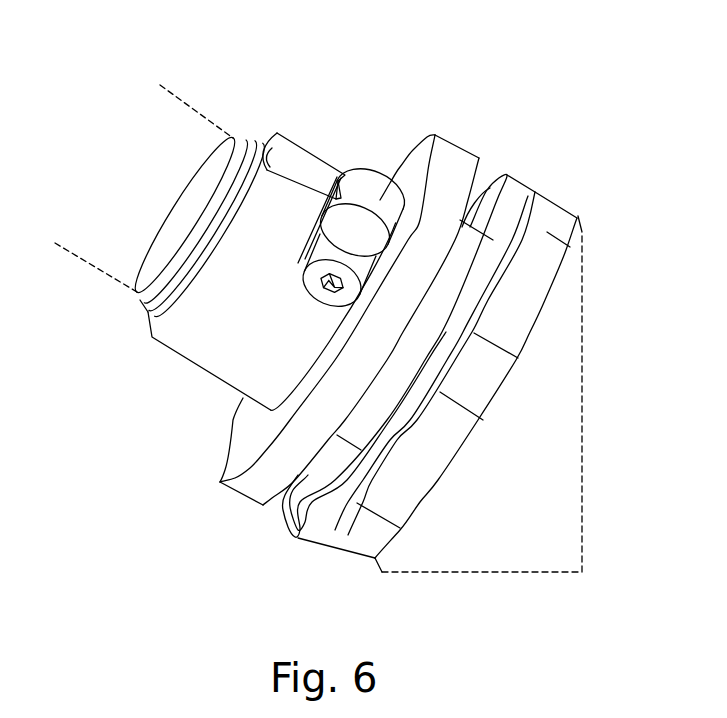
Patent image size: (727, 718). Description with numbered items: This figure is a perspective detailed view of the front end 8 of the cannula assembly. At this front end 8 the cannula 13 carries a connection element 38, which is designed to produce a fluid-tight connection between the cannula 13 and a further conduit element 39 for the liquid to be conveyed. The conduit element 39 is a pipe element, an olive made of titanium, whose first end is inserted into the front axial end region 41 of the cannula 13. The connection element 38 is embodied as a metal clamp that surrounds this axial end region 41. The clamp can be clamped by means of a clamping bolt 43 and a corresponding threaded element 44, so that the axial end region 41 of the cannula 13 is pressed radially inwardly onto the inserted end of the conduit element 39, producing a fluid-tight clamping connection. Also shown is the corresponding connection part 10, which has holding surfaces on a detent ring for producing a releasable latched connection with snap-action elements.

The front end 8 is at (448, 74).
The connection part 10 is at (555, 212).
The cannula 13 is at (230, 173).
The connection element 38 is at (297, 160).
The conduit element 39 is at (458, 158).
The front axial end region 41 is at (147, 308).
The clamping bolt 43 is at (208, 357).
The threaded element 44 is at (365, 176).